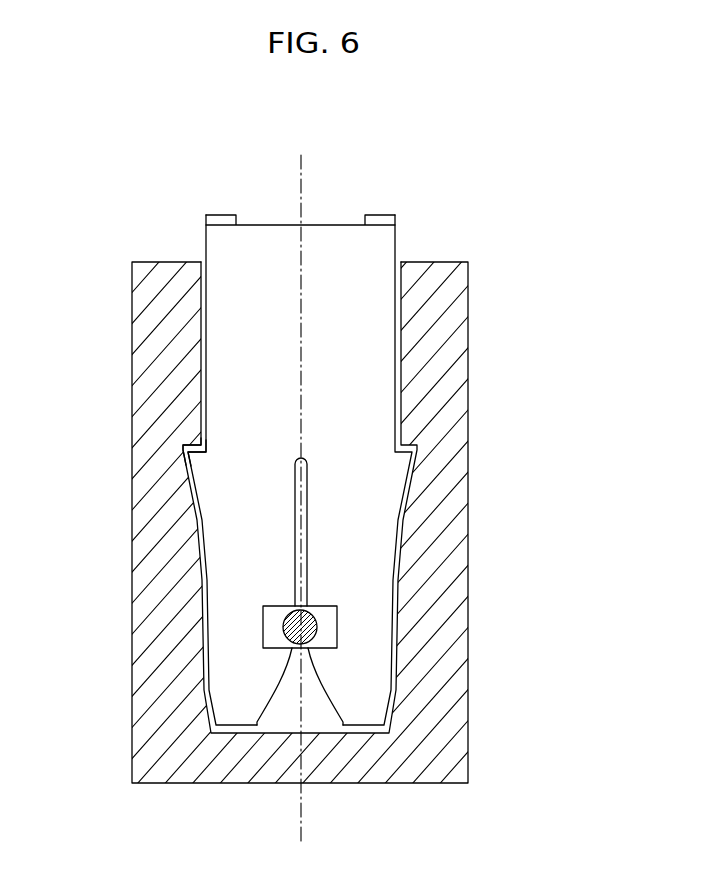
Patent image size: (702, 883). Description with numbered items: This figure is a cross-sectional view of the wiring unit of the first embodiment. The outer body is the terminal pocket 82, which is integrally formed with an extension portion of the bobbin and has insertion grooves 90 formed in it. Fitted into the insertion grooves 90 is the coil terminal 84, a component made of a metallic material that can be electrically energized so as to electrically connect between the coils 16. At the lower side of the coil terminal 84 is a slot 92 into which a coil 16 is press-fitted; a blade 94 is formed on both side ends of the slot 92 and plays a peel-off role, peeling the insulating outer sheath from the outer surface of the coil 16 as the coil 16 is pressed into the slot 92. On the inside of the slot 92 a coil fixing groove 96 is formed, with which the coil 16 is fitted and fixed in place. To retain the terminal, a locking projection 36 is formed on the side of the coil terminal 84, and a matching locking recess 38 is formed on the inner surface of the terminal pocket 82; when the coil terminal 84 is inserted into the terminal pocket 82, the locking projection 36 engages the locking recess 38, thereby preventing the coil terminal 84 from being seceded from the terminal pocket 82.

The terminal pocket 82 is at (440, 633).
The coil terminal 84 is at (342, 265).
The insertion grooves 90 is at (403, 347).
The locking recess 38 is at (192, 440).
The locking projection 36 is at (187, 470).
The slot 92 is at (307, 532).
The coil 16 is at (337, 627).
The coil fixing groove 96 is at (263, 625).
The blade 94 is at (325, 700).